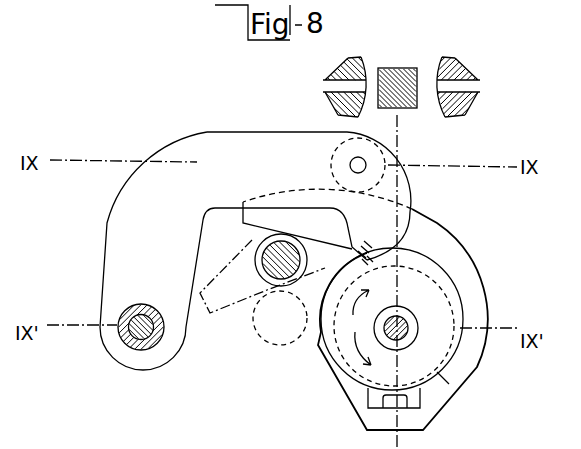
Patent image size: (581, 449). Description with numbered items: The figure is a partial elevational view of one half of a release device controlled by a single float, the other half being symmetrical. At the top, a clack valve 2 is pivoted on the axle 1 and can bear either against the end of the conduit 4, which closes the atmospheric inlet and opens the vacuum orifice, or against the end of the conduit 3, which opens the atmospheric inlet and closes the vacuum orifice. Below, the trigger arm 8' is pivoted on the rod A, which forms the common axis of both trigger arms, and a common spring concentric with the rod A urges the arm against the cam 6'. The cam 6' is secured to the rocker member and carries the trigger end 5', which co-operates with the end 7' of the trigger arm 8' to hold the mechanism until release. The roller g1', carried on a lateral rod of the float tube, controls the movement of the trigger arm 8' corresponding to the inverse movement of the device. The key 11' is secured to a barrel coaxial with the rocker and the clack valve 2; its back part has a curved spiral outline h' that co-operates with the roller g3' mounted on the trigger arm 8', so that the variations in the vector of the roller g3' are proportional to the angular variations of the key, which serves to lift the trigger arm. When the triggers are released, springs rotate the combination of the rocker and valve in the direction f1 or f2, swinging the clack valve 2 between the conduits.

The axle 1 is at (405, 333).
The clack valve 2 is at (395, 72).
The conduit 3 is at (468, 90).
The conduit 4 is at (338, 90).
The trigger end 5' is at (398, 253).
The cam 6' is at (422, 328).
The end of arm 7' is at (431, 236).
The trigger arm 8' is at (255, 235).
The key 11' is at (283, 225).
The rod A is at (118, 334).
The roller g1' is at (296, 260).
The roller g3' is at (388, 163).
The spiral outline h' is at (365, 309).
The direction of rotation f1 is at (364, 303).
The direction of rotation f2 is at (363, 348).